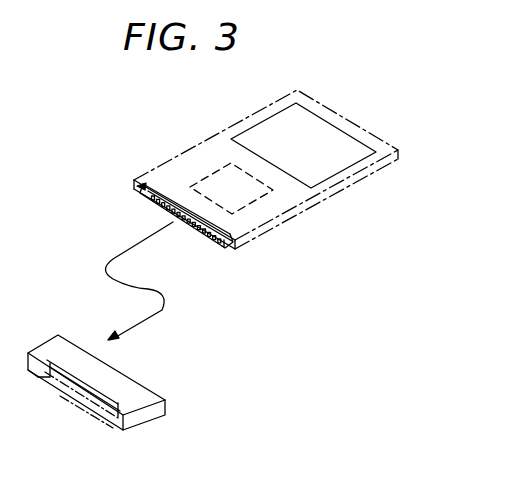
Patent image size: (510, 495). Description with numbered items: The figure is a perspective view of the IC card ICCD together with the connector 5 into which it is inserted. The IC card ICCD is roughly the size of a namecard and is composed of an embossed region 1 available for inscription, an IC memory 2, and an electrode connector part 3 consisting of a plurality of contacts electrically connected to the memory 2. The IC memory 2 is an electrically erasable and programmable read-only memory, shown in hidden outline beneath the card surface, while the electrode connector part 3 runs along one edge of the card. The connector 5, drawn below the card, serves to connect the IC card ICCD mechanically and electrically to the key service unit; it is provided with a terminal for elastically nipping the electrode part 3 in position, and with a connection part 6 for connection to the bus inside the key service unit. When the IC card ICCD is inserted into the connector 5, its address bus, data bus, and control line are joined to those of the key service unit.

The embossed region 1 is at (325, 136).
The IC memory 2 is at (220, 177).
The electrode connector part 3 is at (150, 201).
The connector 5 is at (153, 419).
The connection part 6 is at (117, 419).
The IC card ICCD is at (272, 232).